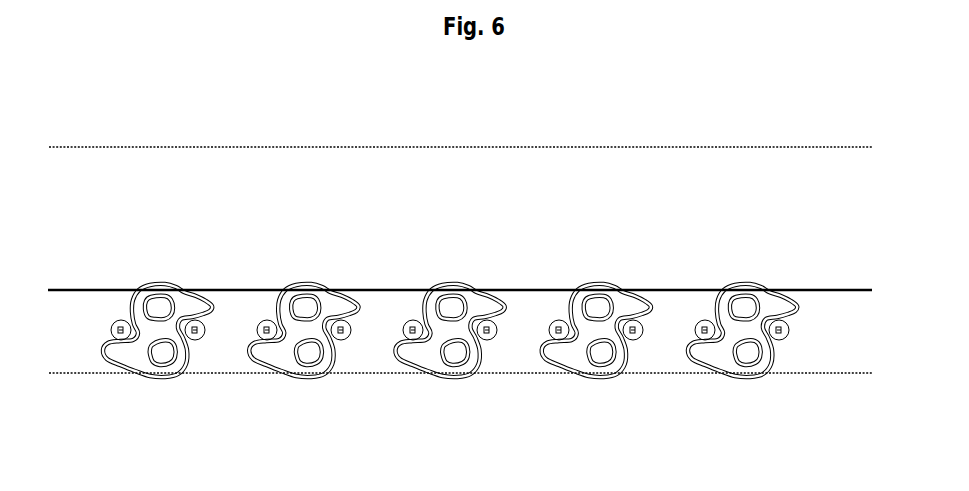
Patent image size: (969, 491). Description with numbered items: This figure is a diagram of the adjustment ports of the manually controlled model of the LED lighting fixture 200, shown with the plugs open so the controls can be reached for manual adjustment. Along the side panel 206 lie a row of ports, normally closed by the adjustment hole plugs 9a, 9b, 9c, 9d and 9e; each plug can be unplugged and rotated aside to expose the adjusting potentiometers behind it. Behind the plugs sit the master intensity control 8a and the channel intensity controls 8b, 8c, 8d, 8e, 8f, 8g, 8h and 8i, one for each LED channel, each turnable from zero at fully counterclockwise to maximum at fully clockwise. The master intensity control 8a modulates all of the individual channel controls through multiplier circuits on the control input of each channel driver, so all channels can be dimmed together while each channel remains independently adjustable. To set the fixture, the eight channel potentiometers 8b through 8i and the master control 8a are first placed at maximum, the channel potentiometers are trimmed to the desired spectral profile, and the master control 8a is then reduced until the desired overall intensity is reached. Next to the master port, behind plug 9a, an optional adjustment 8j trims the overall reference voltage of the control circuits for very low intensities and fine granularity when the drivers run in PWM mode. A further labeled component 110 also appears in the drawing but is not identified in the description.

The LED lighting fixture 200 is at (600, 112).
The upper web layer 110 is at (277, 185).
The side panel 206 is at (848, 316).
The adjustment hole plug 9a is at (157, 333).
The adjustment hole plug 9b is at (303, 333).
The adjustment hole plug 9c is at (449, 333).
The adjustment hole plug 9d is at (595, 333).
The adjustment hole plug 9e is at (741, 333).
The optional adjustment 8j is at (117, 321).
The master intensity control 8a is at (196, 341).
The channel intensity control 8b is at (262, 321).
The channel intensity control 8c is at (342, 341).
The channel intensity control 8d is at (408, 321).
The channel intensity control 8e is at (488, 341).
The channel intensity control 8f is at (554, 321).
The channel intensity control 8g is at (634, 341).
The channel intensity control 8h is at (700, 321).
The channel adjustment potentiometer 8i is at (788, 337).